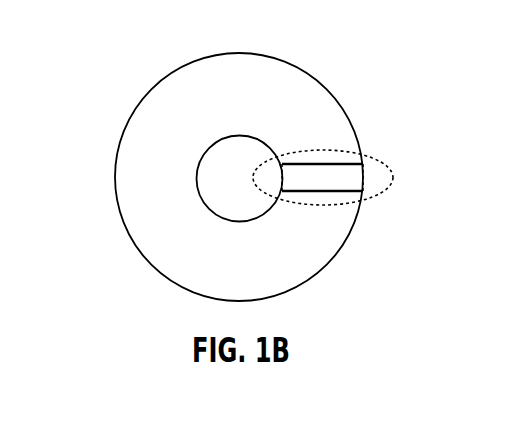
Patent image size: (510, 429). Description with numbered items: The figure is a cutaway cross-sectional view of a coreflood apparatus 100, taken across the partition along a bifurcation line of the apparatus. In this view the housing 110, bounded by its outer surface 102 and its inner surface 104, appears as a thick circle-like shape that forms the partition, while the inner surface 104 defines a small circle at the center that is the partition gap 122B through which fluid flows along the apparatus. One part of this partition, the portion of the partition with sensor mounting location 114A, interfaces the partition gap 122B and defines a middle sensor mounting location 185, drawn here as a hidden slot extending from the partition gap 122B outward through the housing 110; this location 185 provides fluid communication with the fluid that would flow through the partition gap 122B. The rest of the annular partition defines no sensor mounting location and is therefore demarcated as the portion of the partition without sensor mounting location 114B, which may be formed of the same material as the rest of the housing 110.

The coreflood apparatus 100 is at (113, 33).
The outer surface 102 is at (140, 248).
The inner surface 104 is at (197, 175).
The housing 110 is at (308, 260).
The portion of the partition with sensor mounting location 114A is at (340, 150).
The portion of the partition without sensor mounting location 114B is at (145, 150).
The partition gap 122B is at (234, 155).
The middle sensor mounting location 185 is at (338, 185).